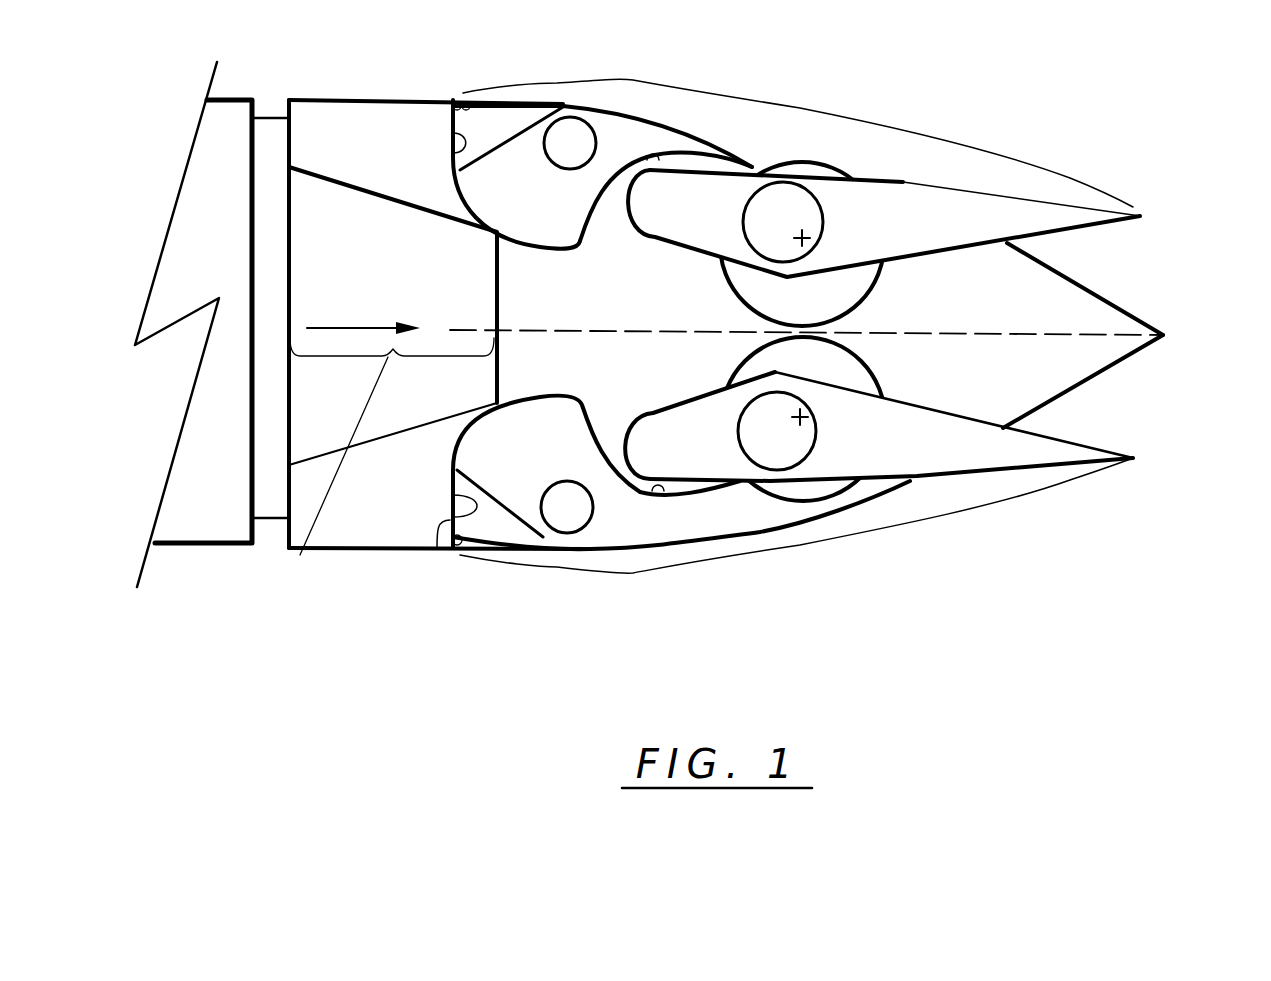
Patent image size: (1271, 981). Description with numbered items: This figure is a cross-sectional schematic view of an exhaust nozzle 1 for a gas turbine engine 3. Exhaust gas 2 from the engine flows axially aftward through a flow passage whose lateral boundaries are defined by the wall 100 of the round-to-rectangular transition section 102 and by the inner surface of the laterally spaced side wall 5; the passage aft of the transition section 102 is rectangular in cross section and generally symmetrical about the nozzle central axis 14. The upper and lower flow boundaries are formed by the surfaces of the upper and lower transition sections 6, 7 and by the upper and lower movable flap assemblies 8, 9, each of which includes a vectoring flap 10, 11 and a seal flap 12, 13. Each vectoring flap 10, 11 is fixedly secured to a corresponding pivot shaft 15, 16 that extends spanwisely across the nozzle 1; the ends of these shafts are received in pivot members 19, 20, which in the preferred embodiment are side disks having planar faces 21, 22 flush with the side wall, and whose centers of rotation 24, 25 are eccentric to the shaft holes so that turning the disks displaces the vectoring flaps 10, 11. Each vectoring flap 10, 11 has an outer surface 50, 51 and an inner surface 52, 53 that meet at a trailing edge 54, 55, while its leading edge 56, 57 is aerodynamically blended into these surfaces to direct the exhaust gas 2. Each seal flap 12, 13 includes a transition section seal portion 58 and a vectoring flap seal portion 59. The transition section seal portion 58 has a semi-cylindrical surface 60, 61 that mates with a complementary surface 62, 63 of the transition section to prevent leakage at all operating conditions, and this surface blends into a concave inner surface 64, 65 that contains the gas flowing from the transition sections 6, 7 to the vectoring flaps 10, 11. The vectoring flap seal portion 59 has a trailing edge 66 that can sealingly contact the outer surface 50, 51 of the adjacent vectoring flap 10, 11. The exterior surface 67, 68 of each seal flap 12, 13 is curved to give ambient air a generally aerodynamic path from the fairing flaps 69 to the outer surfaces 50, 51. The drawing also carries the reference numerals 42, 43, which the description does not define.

The exhaust nozzle 1 is at (918, 116).
The exhaust gas 2 is at (347, 327).
The gas turbine engine 3 is at (229, 427).
The side wall 5 is at (988, 317).
The upper transition section 6 is at (378, 190).
The lower transition section 7 is at (411, 430).
The upper movable flap assembly 8 is at (633, 80).
The lower movable flap assembly 9 is at (633, 574).
The vectoring flap 10 is at (923, 230).
The vectoring flap 11 is at (895, 464).
The seal flap 12 is at (514, 225).
The seal flap 13 is at (514, 457).
The nozzle central axis 14 is at (1170, 334).
The pivot shaft 15 is at (762, 212).
The pivot shaft 16 is at (738, 428).
The pivot member 19 is at (878, 265).
The pivot member 20 is at (882, 375).
The planar face 21 is at (778, 309).
The planar face 22 is at (786, 375).
The center of rotation 24 is at (800, 228).
The center of rotation 25 is at (814, 416).
The upper hinge pin 42 is at (576, 128).
The lower hinge pin 43 is at (563, 485).
The outer surface 50 is at (978, 190).
The outer surface 51 is at (965, 474).
The inner surface 52 is at (985, 250).
The inner surface 53 is at (1010, 425).
The trailing edge 54 is at (1143, 216).
The trailing edge 55 is at (1135, 458).
The leading edge 56 is at (630, 197).
The leading edge 57 is at (620, 447).
The transition section seal portion 58 is at (540, 383).
The vectoring flap seal portion 59 is at (734, 132).
The semi-cylindrical surface 60 is at (512, 243).
The semi-cylindrical surface 61 is at (513, 400).
The complementary surface 62 is at (452, 136).
The complementary surface 63 is at (436, 540).
The concave inner surface 64 is at (692, 140).
The concave inner surface 65 is at (652, 493).
The trailing edge 66 is at (753, 163).
The exterior surface 67 is at (677, 152).
The exterior surface 68 is at (670, 530).
The fairing flaps 69 is at (490, 103).
The wall 100 is at (338, 260).
The round-to-rectangular transition section 102 is at (300, 555).